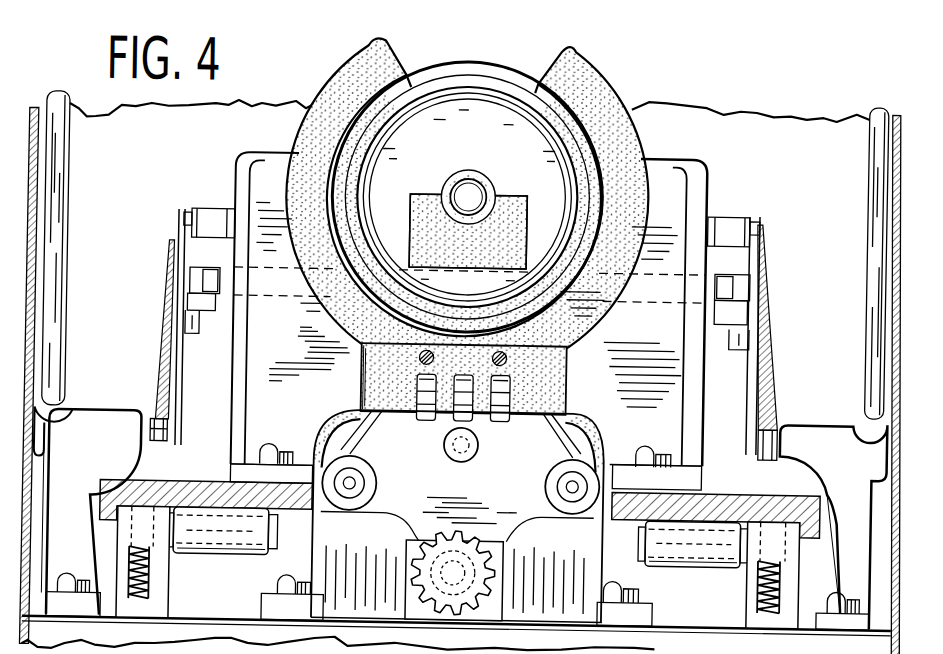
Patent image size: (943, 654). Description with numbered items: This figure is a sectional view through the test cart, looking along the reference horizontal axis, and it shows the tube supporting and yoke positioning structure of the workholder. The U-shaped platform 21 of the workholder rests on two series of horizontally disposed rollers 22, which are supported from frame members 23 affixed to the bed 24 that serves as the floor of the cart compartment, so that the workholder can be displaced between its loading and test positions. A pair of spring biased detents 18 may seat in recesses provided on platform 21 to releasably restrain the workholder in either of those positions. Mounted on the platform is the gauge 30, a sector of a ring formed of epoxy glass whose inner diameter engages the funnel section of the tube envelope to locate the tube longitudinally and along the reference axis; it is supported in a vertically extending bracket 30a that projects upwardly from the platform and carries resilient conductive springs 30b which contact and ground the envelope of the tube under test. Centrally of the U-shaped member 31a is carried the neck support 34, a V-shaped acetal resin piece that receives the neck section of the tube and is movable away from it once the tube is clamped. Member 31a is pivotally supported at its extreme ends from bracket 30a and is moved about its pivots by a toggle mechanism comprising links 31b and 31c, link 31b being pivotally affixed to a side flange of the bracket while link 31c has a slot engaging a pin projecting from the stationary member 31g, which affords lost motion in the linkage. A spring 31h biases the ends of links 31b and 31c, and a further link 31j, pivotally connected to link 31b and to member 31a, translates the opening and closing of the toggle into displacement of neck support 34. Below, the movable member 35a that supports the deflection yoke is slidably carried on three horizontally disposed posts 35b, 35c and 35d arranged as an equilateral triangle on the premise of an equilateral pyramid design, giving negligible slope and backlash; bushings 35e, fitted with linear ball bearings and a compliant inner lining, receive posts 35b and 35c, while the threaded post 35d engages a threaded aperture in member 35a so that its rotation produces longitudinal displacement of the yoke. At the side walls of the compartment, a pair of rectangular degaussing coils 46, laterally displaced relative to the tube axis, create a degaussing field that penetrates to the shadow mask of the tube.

The spring biased detents 18 is at (149, 498).
The U-shaped platform 21 is at (202, 496).
The rollers 22 is at (229, 532).
The frame members 23 is at (158, 588).
The bed 24 is at (268, 607).
The gauge 30 is at (600, 92).
The bracket 30a is at (272, 177).
The resilient conductive springs 30b is at (482, 421).
The U-shaped member 31a is at (652, 273).
The link 31b is at (170, 352).
The link 31c is at (156, 434).
The stationary member 31g is at (92, 424).
The spring 31h is at (182, 306).
The link 31j is at (192, 283).
The neck support 34 is at (413, 219).
The movable member 35a is at (418, 518).
The post 35b is at (352, 490).
The post 35c is at (576, 490).
The threaded post 35d is at (513, 572).
The bushings 35e is at (380, 485).
The degaussing coils 46 is at (62, 206).